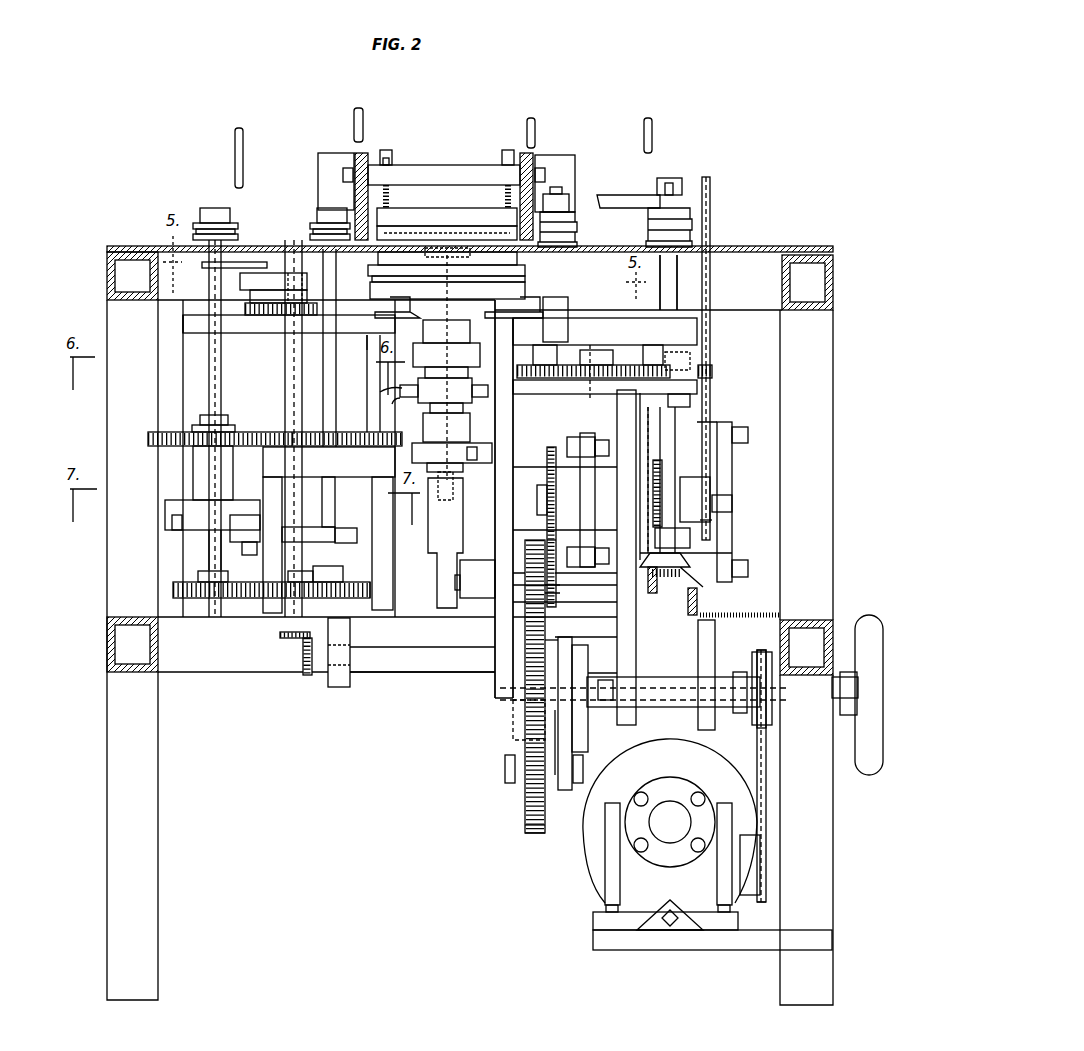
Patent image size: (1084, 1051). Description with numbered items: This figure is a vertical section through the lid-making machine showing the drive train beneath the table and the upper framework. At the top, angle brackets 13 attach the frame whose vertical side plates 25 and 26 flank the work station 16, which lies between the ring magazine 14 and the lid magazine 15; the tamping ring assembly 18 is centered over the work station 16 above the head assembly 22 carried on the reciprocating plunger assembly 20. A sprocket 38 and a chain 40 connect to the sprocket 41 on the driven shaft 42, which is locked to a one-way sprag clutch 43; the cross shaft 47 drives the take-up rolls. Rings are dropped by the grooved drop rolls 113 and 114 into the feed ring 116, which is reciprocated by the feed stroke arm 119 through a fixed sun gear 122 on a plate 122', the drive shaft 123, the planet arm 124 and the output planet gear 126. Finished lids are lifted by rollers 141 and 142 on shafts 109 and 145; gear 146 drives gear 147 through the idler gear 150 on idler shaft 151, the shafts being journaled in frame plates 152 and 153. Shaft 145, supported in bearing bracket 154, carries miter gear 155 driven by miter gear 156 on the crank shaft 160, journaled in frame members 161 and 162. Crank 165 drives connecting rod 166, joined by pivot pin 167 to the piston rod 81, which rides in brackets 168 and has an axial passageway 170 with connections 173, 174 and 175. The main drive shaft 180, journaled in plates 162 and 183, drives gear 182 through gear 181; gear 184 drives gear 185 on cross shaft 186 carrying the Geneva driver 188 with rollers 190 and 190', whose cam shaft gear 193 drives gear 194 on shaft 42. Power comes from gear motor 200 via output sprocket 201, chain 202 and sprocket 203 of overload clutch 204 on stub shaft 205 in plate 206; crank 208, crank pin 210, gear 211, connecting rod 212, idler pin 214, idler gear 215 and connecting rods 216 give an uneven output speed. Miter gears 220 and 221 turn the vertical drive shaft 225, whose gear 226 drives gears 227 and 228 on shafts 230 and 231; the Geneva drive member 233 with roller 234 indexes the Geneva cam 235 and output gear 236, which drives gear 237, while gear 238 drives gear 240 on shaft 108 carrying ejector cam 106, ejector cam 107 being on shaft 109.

The angle brackets 13 is at (330, 158).
The ring magazine 14 is at (272, 158).
The lid magazine 15 is at (656, 160).
The work station 16 is at (463, 150).
The tamping ring assembly 18 is at (425, 165).
The reciprocating plunger assembly 20 is at (530, 285).
The head assembly 22 is at (540, 262).
The frame side plate 25 is at (535, 160).
The frame side plate 26 is at (362, 153).
The sprocket 38 is at (710, 192).
The chain 40 is at (708, 354).
The sprocket 41 is at (708, 518).
The driven shaft 42 is at (733, 500).
The one-way sprag clutch 43 is at (700, 482).
The cross shaft 47 is at (622, 200).
The piston rod 81 is at (466, 425).
The ejector cam 106 is at (400, 312).
The ejector cam 107 is at (508, 316).
The vertical shaft 108 is at (372, 347).
The vertical shaft 109 is at (570, 300).
The drop roll 113 is at (232, 222).
The drop roll 114 is at (306, 210).
The feed ring 116 is at (300, 236).
The feed stroke arm 119 is at (204, 266).
The fixed sun gear 122 is at (289, 338).
The plate 122' is at (182, 335).
The drive shaft 123 is at (300, 375).
The planet arm 124 is at (280, 278).
The output planet gear 126 is at (252, 318).
The lifting roller 141 is at (575, 212).
The lifting roller 142 is at (648, 222).
The vertical shaft 145 is at (690, 279).
The gear 146 is at (652, 355).
The gear 147 is at (566, 360).
The idler gear 150 is at (622, 370).
The vertical idler shaft 151 is at (596, 331).
The frame plate 152 is at (690, 386).
The frame plate 153 is at (690, 328).
The bearing bracket 154 is at (690, 540).
The miter gear 155 is at (688, 580).
The miter gear 156 is at (655, 593).
The crank shaft 160 is at (600, 582).
The vertical frame member 161 is at (636, 638).
The vertical frame member 162 is at (508, 350).
The crank 165 is at (474, 565).
The connecting rod 166 is at (440, 528).
The pivot pin 167 is at (458, 488).
The brackets 168 is at (425, 340).
The axial passageway 170 is at (478, 320).
The vacuum and air line connection 173 is at (488, 390).
The vacuum and air line connection 174 is at (378, 398).
The vacuum and air line connection 175 is at (398, 402).
The main drive shaft 180 is at (424, 672).
The gear 181 is at (545, 632).
The gear 182 is at (525, 545).
The vertical frame plate 183 is at (345, 680).
The gear 184 is at (548, 590).
The gear 185 is at (547, 447).
The cross shaft 186 is at (526, 492).
The Geneva driver 188 is at (586, 433).
The roller 190 is at (535, 528).
The roller 190' is at (579, 484).
The gear 193 is at (662, 465).
The gear 194 is at (650, 490).
The gear motor 200 is at (595, 852).
The output sprocket 201 is at (768, 898).
The chain 202 is at (768, 766).
The sprocket 203 is at (772, 720).
The overload clutch 204 is at (738, 672).
The stub shaft 205 is at (660, 707).
The vertical frame plate 206 is at (714, 716).
The crank 208 is at (580, 660).
The crank pin 210 is at (580, 727).
The crank gear 211 is at (520, 730).
The connecting rod 212 is at (541, 820).
The idler pin 214 is at (504, 772).
The idler gear 215 is at (527, 835).
The connecting rods 216 is at (552, 790).
The miter gear 220 is at (302, 676).
The miter gear 221 is at (280, 640).
The vertical drive shaft 225 is at (280, 470).
The gear 226 is at (290, 598).
The gear 227 is at (185, 580).
The gear 228 is at (370, 592).
The vertical shaft 230 is at (215, 370).
The vertical shaft 231 is at (336, 375).
The Geneva drive member 233 is at (345, 542).
The roller 234 is at (246, 515).
The Geneva cam 235 is at (175, 500).
The output gear 236 is at (170, 432).
The gear 237 is at (295, 436).
The gear 238 is at (345, 468).
The gear 240 is at (350, 450).